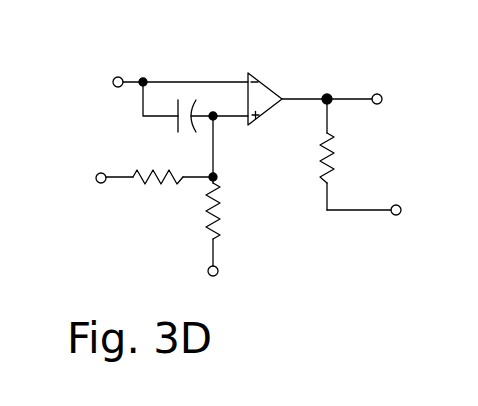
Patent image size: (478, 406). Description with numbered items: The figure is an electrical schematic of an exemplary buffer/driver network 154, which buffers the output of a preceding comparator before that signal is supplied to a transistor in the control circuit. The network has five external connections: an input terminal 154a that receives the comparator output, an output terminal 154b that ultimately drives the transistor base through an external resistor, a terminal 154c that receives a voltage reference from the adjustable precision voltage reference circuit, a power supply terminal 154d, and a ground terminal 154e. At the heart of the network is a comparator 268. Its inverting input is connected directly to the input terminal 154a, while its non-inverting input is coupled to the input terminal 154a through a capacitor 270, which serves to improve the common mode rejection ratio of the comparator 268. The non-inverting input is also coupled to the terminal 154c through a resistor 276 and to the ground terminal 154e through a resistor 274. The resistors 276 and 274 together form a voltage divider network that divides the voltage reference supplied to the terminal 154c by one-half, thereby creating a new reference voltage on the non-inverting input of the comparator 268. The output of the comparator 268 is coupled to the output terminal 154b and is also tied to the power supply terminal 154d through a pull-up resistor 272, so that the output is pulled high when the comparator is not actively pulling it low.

The buffer/driver network 154 is at (266, 55).
The input terminal 154a is at (126, 75).
The output terminal 154b is at (407, 92).
The terminal 154c is at (93, 177).
The power supply terminal 154d is at (395, 215).
The ground terminal 154e is at (212, 277).
The comparator 268 is at (277, 94).
The capacitor 270 is at (176, 123).
The pull-up resistor 272 is at (337, 147).
The resistor 274 is at (218, 213).
The resistor 276 is at (170, 192).